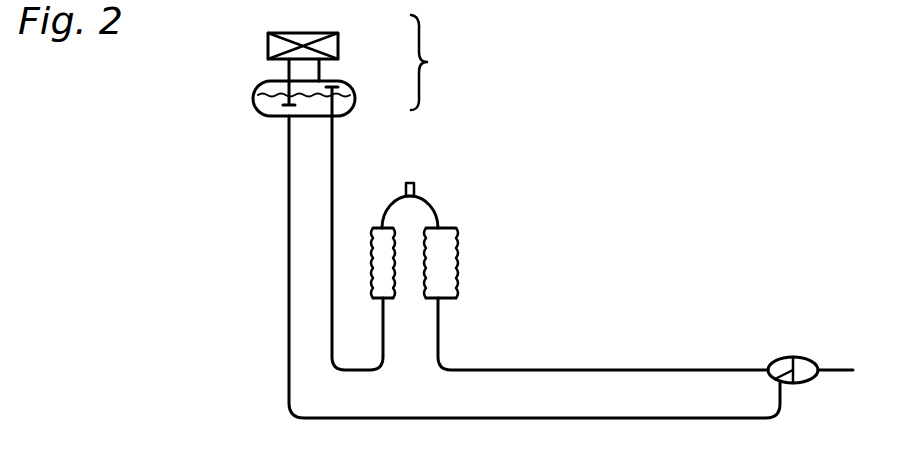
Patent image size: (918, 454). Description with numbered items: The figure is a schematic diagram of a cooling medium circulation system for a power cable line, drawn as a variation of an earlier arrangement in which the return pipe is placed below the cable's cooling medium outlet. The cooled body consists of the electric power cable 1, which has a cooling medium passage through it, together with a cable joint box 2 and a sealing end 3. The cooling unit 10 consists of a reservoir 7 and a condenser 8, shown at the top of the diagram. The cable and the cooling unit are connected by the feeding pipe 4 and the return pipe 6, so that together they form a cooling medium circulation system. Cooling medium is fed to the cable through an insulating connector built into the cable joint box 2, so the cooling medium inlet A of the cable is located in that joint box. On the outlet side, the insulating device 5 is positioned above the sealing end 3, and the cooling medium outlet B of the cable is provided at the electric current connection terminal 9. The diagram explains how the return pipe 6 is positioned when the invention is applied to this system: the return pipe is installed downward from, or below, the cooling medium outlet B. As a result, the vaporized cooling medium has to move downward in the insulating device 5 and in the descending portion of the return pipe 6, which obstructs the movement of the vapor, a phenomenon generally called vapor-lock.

The electric power cable 1 is at (593, 370).
The cable joint box 2 is at (786, 358).
The sealing end 3 is at (457, 258).
The feeding pipe 4 is at (642, 418).
The insulating device 5 is at (372, 247).
The return pipe 6 is at (357, 373).
The reservoir 7 is at (355, 83).
The condenser 8 is at (338, 42).
The electric current connection terminal 9 is at (409, 182).
The cooling unit 10 is at (446, 62).
The cooling medium inlet A is at (770, 378).
The cooling medium outlet B is at (414, 194).